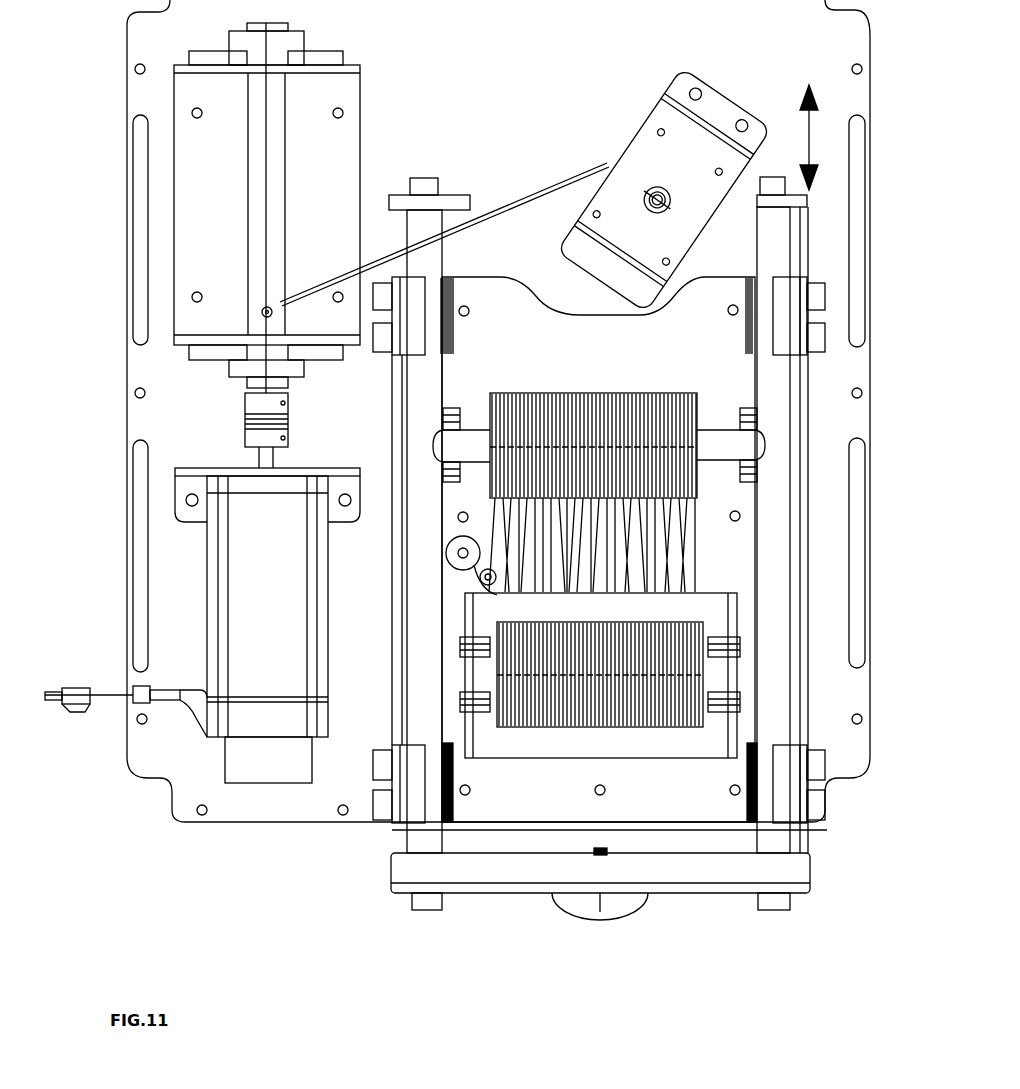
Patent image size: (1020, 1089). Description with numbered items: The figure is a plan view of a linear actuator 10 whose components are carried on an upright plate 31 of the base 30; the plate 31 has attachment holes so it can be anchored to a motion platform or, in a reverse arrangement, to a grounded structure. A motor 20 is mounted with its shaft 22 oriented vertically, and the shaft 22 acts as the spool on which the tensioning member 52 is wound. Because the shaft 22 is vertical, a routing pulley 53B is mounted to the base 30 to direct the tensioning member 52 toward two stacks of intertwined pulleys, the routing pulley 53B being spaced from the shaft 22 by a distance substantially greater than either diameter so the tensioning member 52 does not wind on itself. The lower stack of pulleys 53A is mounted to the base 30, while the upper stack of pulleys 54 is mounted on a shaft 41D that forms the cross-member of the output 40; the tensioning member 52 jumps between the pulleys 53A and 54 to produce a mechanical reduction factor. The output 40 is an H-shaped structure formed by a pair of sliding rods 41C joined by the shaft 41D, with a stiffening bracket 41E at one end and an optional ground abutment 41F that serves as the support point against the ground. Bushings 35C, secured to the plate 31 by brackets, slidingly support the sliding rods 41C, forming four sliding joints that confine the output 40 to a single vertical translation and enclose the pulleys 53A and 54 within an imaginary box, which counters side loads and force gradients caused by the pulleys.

The linear actuator 10 is at (84, 100).
The motor 20 is at (282, 561).
The shaft 22 is at (278, 462).
The base 30 is at (108, 482).
The plate 31 is at (468, 86).
The bushings 35C is at (412, 310).
The output 40 is at (454, 180).
The sliding rods 41C is at (414, 622).
The shaft 41D is at (470, 430).
The stiffening bracket 41E is at (490, 875).
The ground abutment 41F is at (598, 912).
The tensioning member 52 is at (527, 192).
The pulleys 53A is at (700, 742).
The routing pulley 53B is at (653, 135).
The pulleys 54 is at (700, 380).